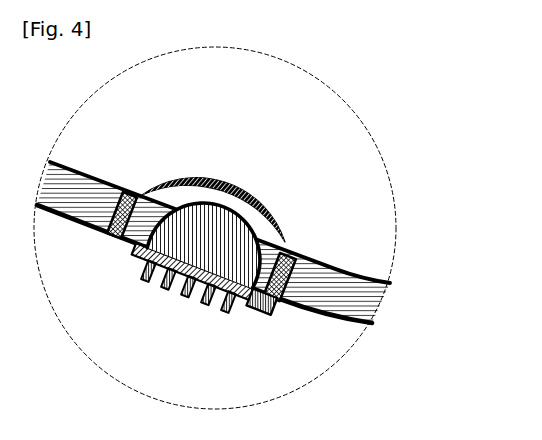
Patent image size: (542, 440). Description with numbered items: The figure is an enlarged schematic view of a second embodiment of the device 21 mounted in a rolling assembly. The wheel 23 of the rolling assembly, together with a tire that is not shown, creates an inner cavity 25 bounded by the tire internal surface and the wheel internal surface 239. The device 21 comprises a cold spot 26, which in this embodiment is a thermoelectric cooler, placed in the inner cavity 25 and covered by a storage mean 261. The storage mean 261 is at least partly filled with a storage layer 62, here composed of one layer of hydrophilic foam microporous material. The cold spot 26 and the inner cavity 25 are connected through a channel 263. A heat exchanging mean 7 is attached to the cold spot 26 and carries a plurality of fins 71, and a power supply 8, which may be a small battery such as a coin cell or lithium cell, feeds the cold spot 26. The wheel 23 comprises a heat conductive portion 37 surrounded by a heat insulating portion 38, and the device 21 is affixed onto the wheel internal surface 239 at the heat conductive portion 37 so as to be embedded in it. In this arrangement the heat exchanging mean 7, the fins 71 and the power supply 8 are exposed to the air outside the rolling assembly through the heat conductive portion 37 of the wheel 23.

The heat exchanging mean 7 is at (165, 318).
The power supply 8 is at (265, 315).
The device 21 is at (259, 184).
The wheel 23 is at (345, 308).
The inner cavity 25 is at (287, 104).
The cold spot 26 is at (205, 207).
The heat conductive portion 37 is at (145, 208).
The heat insulating portion 38 is at (245, 193).
The storage layer 62 is at (229, 178).
The fins 71 is at (145, 281).
The wheel internal surface 239 is at (380, 281).
The storage mean 261 is at (212, 177).
The channel 263 is at (286, 241).